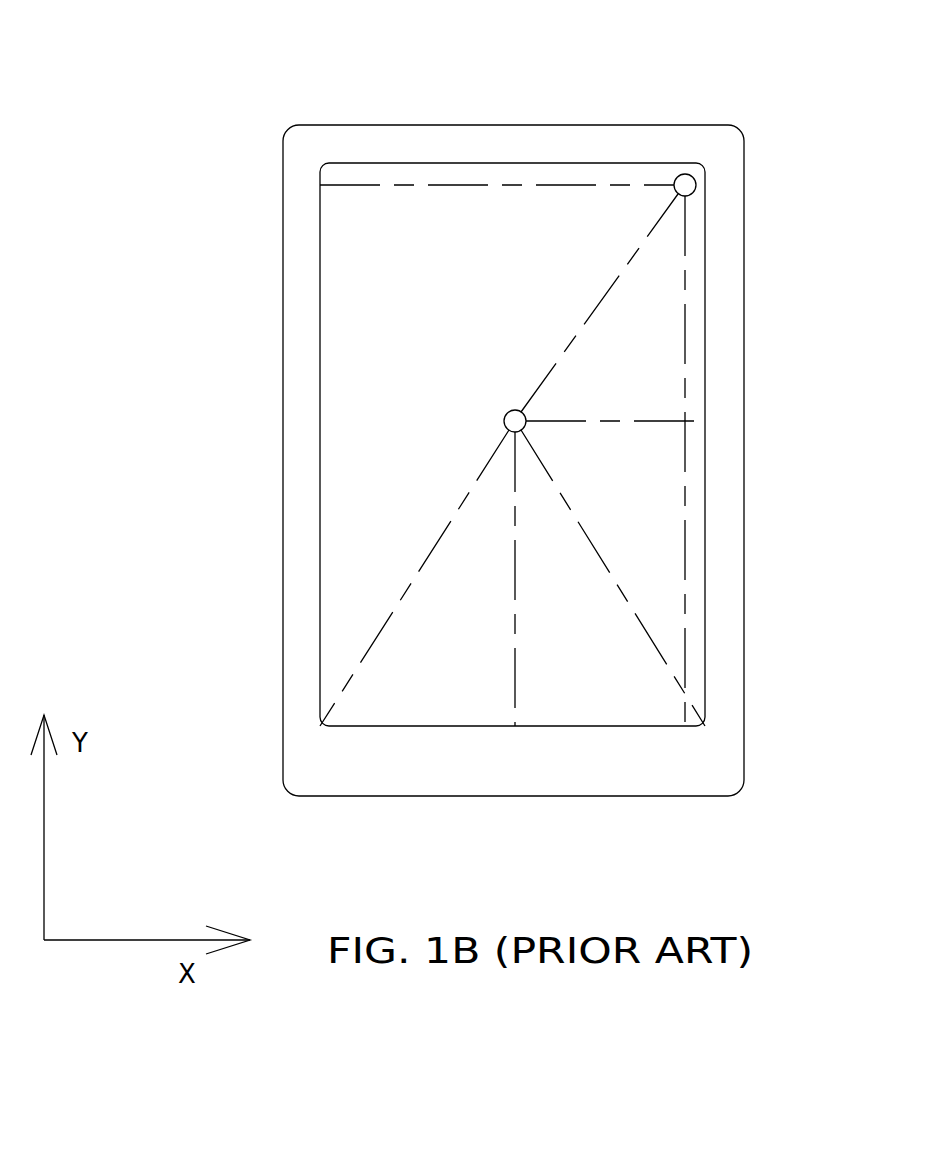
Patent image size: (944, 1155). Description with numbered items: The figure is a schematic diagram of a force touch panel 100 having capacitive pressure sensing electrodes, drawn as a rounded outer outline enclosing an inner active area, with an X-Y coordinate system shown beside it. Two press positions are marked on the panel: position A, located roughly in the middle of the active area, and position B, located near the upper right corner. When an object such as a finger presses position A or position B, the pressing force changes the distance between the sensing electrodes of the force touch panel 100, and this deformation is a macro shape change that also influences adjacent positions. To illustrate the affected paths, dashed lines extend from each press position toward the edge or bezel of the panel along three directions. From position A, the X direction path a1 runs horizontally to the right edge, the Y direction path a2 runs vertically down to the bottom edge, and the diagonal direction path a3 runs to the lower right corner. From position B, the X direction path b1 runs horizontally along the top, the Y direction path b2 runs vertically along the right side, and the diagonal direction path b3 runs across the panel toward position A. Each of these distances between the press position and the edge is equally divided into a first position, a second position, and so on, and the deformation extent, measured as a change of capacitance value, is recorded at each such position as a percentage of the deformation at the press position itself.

The force touch panel 100 is at (544, 40).
The position A is at (507, 431).
The position B is at (694, 181).
The X direction path from position A a1 is at (615, 424).
The Y direction path from position A a2 is at (520, 579).
The diagonal direction path from position A a3 is at (613, 578).
The X direction path from position B b1 is at (497, 185).
The Y direction path from position B b2 is at (683, 461).
The diagonal direction path from position B b3 is at (599, 303).